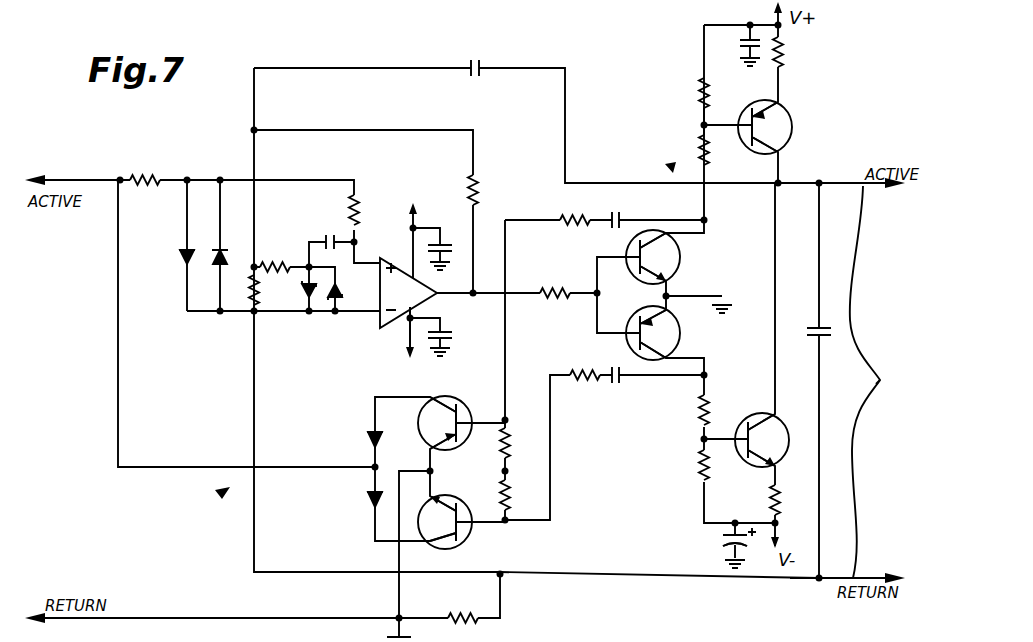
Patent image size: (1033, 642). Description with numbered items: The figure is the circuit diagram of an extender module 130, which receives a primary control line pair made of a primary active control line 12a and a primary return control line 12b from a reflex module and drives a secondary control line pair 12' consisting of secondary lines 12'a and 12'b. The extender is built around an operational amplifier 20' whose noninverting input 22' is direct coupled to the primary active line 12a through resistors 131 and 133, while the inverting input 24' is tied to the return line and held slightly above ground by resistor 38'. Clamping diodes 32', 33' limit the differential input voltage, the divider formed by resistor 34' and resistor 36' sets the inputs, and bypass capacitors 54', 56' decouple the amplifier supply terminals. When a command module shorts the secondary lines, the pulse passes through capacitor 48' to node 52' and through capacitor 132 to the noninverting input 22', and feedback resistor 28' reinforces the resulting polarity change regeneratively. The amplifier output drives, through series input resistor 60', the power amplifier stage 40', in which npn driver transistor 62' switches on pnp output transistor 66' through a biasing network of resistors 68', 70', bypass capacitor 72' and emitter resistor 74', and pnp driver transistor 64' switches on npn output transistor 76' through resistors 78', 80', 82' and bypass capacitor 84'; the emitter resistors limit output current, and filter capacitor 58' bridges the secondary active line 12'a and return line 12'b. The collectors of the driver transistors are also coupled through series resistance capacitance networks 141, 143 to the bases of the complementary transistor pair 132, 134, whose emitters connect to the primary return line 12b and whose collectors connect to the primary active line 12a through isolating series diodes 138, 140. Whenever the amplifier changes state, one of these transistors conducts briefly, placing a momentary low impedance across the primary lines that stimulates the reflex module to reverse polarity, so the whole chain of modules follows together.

The primary active control line 12a is at (102, 158).
The resistor 131 is at (152, 177).
The node 52' is at (241, 261).
The resistor 36' is at (276, 248).
The transistor / capacitor 132 is at (330, 234).
The resistor 133 is at (362, 212).
The noninverting input 22' is at (378, 241).
The resistor 28' is at (494, 175).
The bypass capacitor 54' is at (469, 232).
The resistor 34' is at (230, 318).
The voltage clamping diode 32' is at (292, 321).
The voltage clamping diode 33' is at (341, 321).
The inverting input 24' is at (351, 349).
The operational amplifier 20' is at (393, 334).
The bypass capacitor 56' is at (456, 322).
The series input resistor 60' is at (549, 318).
The series resistance capacitance network 141 is at (594, 214).
The series resistance capacitance network 143 is at (610, 384).
The npn driver transistor 62' is at (690, 257).
The pnp driver transistor 64' is at (688, 334).
The power amplifier stage 40' is at (661, 124).
The resistor 70' is at (728, 160).
The emitter-base resistor 68' is at (676, 93).
The bypass capacitor 72' is at (712, 36).
The emitter resistor 74' is at (808, 52).
The pnp output transistor 66' is at (801, 127).
The secondary active control line 12'a is at (832, 171).
The filter capacitor 58' is at (808, 319).
The secondary control line pair 12' is at (899, 390).
The npn output transistor 76' is at (756, 420).
The resistor 78' is at (673, 411).
The emitter-base resistor 80' is at (670, 468).
The emitter resistor 82' is at (745, 500).
The bypass capacitor 84' is at (710, 544).
The series diode 138 is at (368, 438).
The series diode 140 is at (366, 497).
The extender module 130 is at (225, 490).
The transistor 134 is at (470, 538).
The resistor 38' is at (454, 603).
The primary return control line 12b is at (226, 585).
The secondary return control line 12'b is at (822, 609).
The capacitor 48' is at (493, 53).